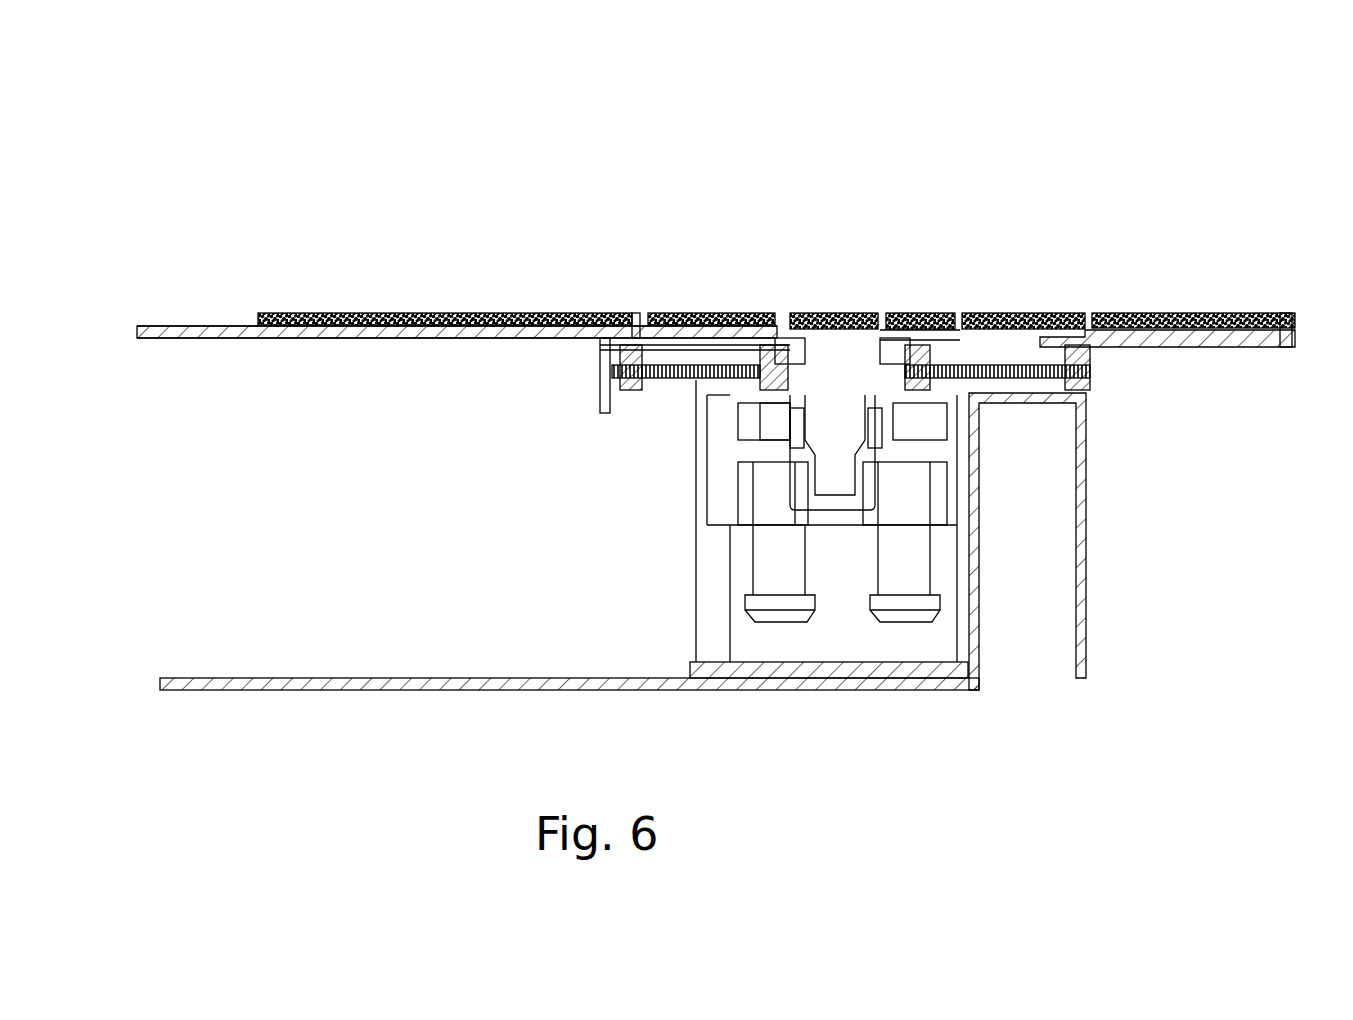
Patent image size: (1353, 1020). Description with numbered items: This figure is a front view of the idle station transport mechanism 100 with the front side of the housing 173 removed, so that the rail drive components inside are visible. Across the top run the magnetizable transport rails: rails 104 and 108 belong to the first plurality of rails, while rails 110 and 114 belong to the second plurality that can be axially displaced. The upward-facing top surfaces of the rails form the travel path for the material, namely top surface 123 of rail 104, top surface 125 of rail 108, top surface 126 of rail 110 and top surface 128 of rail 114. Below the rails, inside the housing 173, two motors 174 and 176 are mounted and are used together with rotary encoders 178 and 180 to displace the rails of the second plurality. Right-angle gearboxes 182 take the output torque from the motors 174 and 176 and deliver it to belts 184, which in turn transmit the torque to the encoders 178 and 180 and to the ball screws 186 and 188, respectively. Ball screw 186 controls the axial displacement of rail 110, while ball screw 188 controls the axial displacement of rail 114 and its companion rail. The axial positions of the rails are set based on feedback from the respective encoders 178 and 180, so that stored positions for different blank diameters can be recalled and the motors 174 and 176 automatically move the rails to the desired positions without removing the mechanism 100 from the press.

The idle station transport mechanism 100 is at (765, 186).
The magnetizable transport rail 104 is at (913, 310).
The magnetizable transport rail 108 is at (815, 310).
The magnetizable transport rail 110 is at (493, 310).
The magnetizable transport rail 114 is at (1006, 308).
The top surface 123 is at (933, 312).
The top surface 125 is at (805, 330).
The top surface 126 is at (537, 312).
The top surface 128 is at (987, 312).
The housing 173 is at (980, 607).
The motor 174 is at (768, 570).
The motor 176 is at (918, 575).
The rotary encoder 178 is at (755, 425).
The rotary encoder 180 is at (935, 425).
The right-angle gearbox 182 is at (900, 490).
The belt 184 is at (882, 445).
The ball screw 186 is at (700, 360).
The ball screw 188 is at (988, 364).